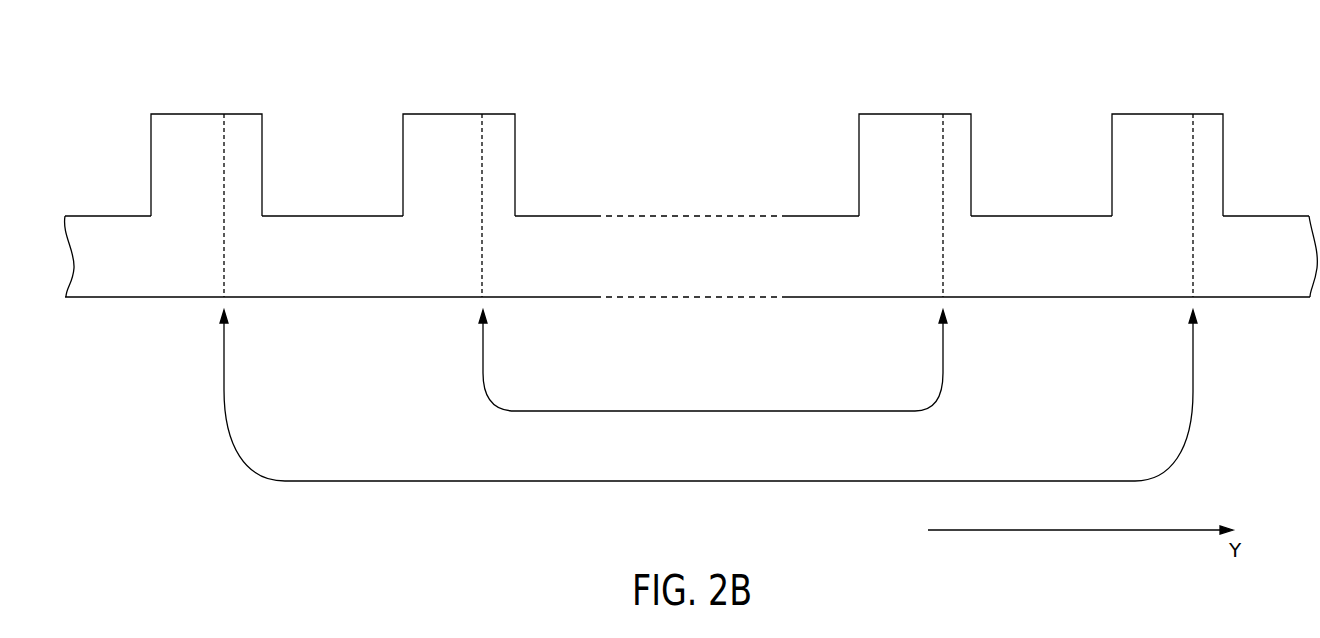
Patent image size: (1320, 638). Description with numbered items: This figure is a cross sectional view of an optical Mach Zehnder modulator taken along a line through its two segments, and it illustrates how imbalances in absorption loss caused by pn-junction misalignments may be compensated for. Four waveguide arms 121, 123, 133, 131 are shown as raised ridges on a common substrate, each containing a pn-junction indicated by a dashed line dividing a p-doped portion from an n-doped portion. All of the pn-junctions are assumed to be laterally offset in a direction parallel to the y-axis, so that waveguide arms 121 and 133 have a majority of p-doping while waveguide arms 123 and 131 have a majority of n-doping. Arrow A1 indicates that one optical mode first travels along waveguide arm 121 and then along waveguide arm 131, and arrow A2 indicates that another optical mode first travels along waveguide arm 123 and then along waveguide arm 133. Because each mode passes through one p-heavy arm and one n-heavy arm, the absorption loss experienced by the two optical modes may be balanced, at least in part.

The waveguide arm 121 is at (215, 82).
The waveguide arm 123 is at (469, 82).
The waveguide arm 133 is at (935, 82).
The waveguide arm 131 is at (1178, 82).
The arrow A1 is at (712, 481).
The arrow A2 is at (705, 411).